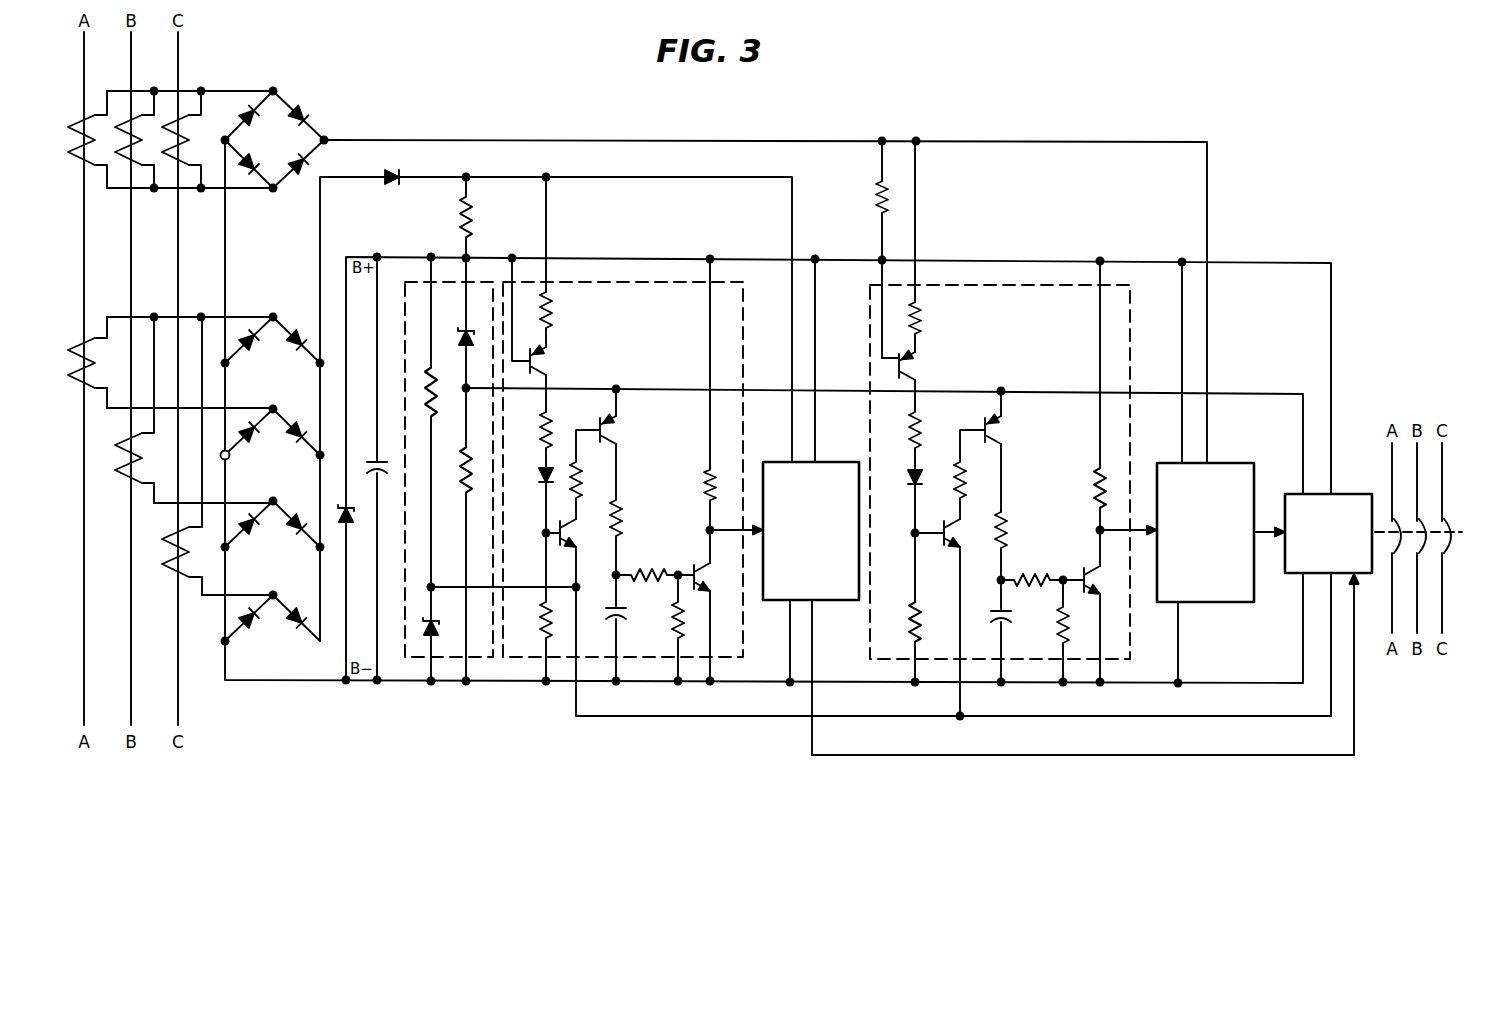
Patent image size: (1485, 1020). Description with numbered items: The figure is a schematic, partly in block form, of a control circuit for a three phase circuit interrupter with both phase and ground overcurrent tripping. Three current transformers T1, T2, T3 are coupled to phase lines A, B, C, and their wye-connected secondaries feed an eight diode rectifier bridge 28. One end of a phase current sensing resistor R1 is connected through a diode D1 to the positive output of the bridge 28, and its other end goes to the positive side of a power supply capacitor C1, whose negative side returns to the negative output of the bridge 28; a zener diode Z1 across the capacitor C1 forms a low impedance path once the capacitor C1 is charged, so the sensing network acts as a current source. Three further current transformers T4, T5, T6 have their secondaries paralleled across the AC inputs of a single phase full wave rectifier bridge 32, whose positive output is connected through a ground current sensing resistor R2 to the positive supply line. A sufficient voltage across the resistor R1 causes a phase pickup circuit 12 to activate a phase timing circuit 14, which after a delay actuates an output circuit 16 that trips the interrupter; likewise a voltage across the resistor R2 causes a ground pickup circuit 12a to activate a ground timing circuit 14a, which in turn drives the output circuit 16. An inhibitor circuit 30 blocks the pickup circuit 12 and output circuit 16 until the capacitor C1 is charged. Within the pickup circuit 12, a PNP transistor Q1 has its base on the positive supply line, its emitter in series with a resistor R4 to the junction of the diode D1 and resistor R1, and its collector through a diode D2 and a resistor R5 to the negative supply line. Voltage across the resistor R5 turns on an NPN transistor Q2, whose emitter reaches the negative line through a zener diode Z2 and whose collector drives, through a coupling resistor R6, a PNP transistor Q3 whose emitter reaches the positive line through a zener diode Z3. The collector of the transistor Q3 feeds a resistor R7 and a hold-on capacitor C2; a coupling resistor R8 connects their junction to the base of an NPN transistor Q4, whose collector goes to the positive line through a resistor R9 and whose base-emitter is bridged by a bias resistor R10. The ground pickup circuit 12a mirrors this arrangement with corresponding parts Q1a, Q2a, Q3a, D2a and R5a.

The current transformer T1 is at (92, 362).
The current transformer T2 is at (140, 410).
The current transformer T3 is at (187, 456).
The current transformer T4 is at (87, 151).
The current transformer T5 is at (134, 151).
The current transformer T6 is at (181, 151).
The rectifier bridge 32 is at (289, 211).
The rectifier bridge 28 is at (287, 661).
The diode D1 is at (394, 190).
The phase current sensing resistor R1 is at (479, 217).
The ground current sensing resistor R2 is at (867, 197).
The resistor R4 is at (559, 310).
The resistor R5 is at (530, 620).
The coupling resistor R6 is at (588, 480).
The resistor R7 is at (628, 518).
The coupling resistor R8 is at (649, 568).
The resistor R9 is at (696, 485).
The bias resistor R10 is at (662, 624).
The resistor R5a is at (931, 622).
The zener diode Z1 is at (355, 522).
The zener diode Z2 is at (440, 636).
The zener diode Z3 is at (458, 329).
The power supply capacitor C1 is at (385, 469).
The hold-on capacitor C2 is at (608, 623).
The diode D2 is at (530, 476).
The diode D2a is at (898, 479).
The phase overcurrent sensing PNP transistor Q1 is at (546, 360).
The NPN transistor Q2 is at (577, 535).
The PNP transistor Q3 is at (616, 429).
The NPN transistor Q4 is at (709, 579).
The transistor Q1a is at (925, 365).
The transistor Q2a is at (966, 535).
The transistor Q3a is at (1010, 429).
The inhibitor circuit 30 is at (402, 385).
The phase pickup circuit 12 is at (628, 279).
The ground pickup circuit 12a is at (987, 282).
The phase timing circuit 14 is at (823, 457).
The ground timing circuit 14a is at (1217, 458).
The output circuit 16 is at (1336, 490).